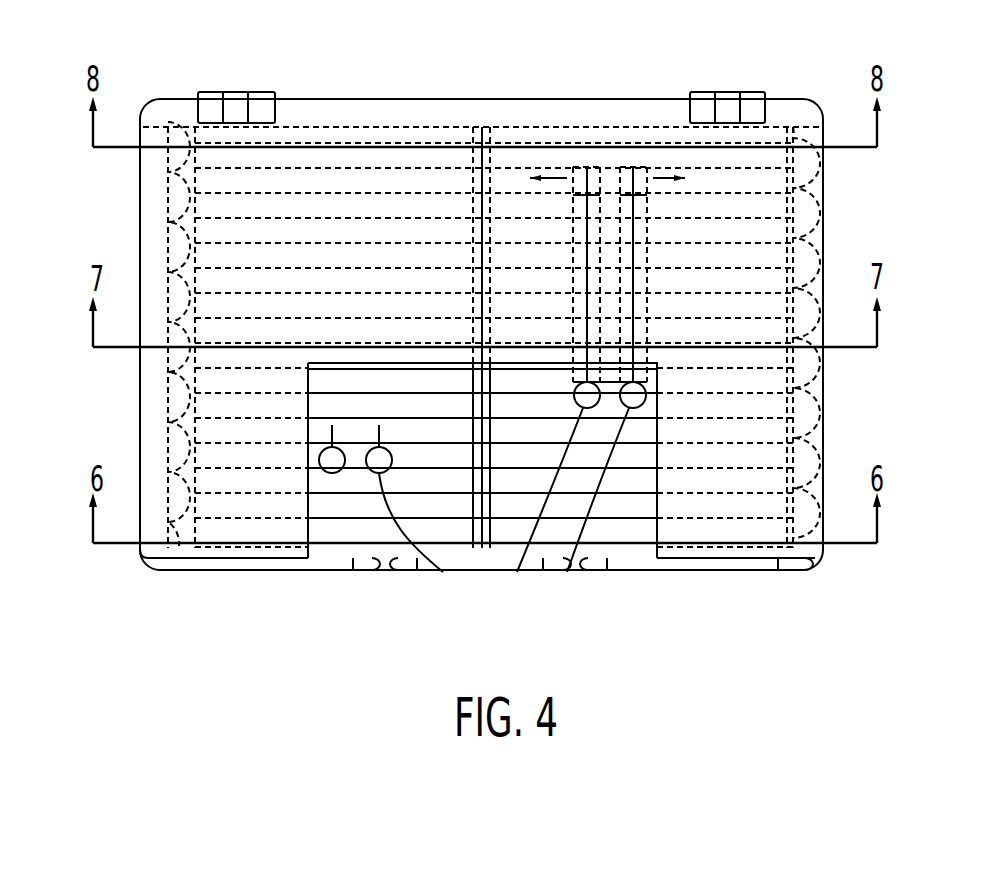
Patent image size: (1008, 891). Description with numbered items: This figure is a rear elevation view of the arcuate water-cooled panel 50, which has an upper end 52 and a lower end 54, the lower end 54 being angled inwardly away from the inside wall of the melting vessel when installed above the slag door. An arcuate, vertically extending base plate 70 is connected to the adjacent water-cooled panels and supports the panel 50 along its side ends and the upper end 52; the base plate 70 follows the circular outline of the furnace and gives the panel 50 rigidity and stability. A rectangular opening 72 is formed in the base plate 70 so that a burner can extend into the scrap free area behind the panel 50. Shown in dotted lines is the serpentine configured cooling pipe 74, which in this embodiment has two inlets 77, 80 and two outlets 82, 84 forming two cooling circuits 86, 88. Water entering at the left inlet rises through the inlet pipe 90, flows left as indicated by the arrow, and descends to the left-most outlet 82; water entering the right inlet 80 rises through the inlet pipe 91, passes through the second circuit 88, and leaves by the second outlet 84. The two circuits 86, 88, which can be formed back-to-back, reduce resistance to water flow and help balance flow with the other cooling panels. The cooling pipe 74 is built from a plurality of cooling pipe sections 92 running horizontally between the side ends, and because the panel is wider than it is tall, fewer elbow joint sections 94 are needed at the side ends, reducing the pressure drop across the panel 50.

The water-cooled panel 50 is at (358, 73).
The upper end 52 is at (428, 99).
The lower end 54 is at (622, 569).
The base plate 70 is at (818, 390).
The rectangular opening 72 is at (308, 507).
The serpentine configured cooling pipe 74 is at (138, 378).
The inlet 77 is at (517, 572).
The inlet 80 is at (567, 572).
The outlet 82 is at (332, 473).
The second outlet 84 is at (443, 572).
The cooling circuit 86 is at (502, 178).
The second circuit 88 is at (765, 178).
The inlet pipe 90 is at (577, 192).
The inlet pipe 91 is at (633, 188).
The cooling pipe sections 92 is at (210, 262).
The elbow joint sections 94 is at (813, 313).